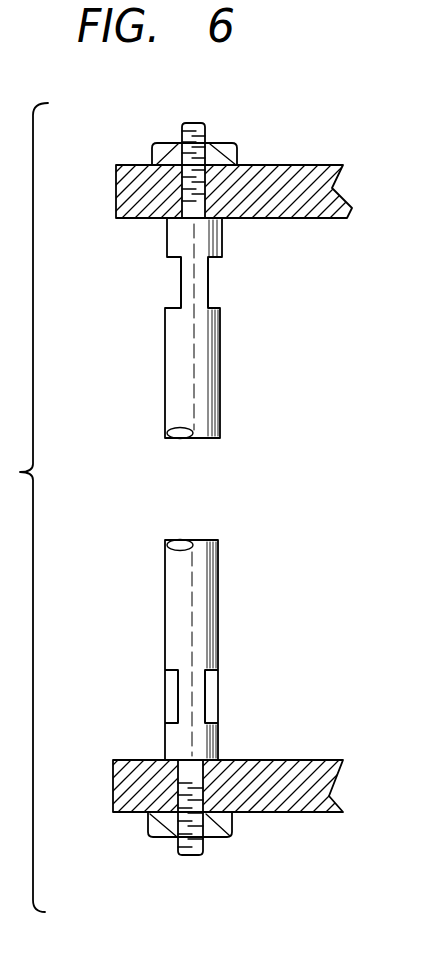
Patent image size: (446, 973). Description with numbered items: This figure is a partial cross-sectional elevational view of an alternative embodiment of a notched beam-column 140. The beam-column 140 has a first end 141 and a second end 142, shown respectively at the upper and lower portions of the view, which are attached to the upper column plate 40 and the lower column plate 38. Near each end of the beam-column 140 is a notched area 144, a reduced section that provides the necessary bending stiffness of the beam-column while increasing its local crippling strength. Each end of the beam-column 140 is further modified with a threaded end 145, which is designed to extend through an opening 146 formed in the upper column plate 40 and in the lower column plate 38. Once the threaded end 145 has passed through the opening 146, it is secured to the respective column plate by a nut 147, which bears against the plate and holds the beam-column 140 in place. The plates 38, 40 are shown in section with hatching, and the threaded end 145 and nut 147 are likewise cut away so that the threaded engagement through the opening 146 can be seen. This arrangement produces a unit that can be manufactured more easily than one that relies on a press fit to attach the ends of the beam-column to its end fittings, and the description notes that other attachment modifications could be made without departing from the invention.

The lower column plate 38 is at (343, 770).
The upper column plate 40 is at (347, 172).
The beam-column 140 is at (203, 492).
The first end 141 is at (167, 229).
The second end 142 is at (150, 760).
The notched area 144 is at (208, 283).
The threaded end 145 is at (205, 131).
The opening 146 is at (199, 200).
The nut 147 is at (237, 157).